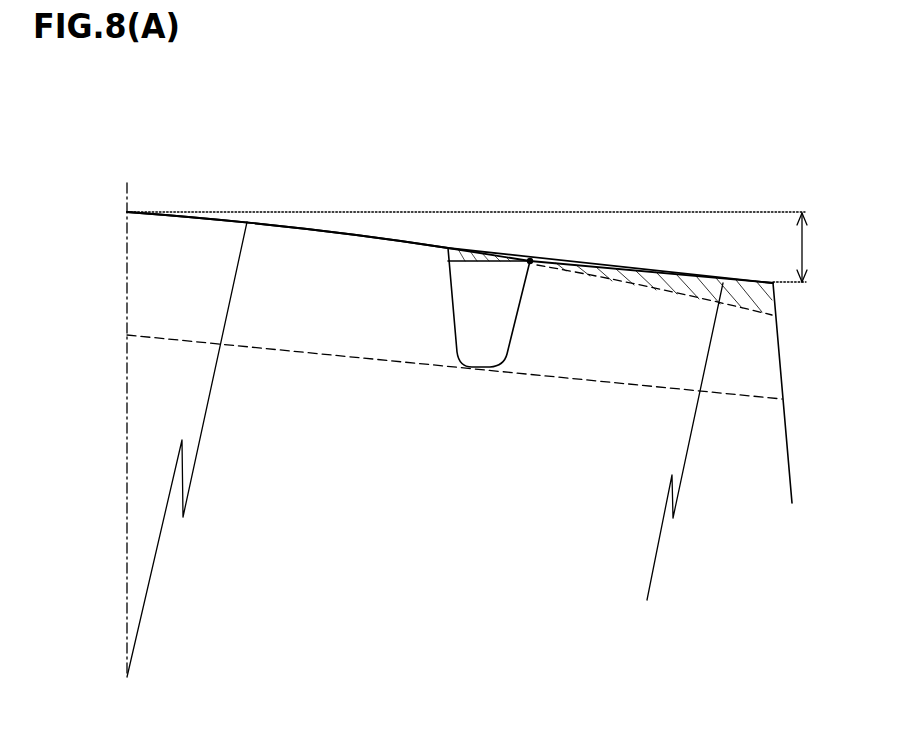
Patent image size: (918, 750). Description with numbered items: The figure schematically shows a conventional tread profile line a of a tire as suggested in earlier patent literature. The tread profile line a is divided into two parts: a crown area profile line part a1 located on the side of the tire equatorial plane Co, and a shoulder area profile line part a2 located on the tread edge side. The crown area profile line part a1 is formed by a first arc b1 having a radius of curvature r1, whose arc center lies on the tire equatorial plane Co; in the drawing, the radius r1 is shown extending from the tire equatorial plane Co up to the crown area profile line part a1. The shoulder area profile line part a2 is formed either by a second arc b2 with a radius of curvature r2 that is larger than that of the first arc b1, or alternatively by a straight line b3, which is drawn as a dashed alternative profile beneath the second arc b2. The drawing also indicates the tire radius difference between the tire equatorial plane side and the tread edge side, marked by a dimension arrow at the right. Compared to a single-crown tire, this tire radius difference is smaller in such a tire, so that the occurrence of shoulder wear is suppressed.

The tire equatorial plane Co is at (125, 418).
The tread profile line a is at (362, 124).
The crown area profile line part a1 is at (395, 237).
The first arc b1 is at (328, 187).
The shoulder area profile line part a2 is at (637, 268).
The second arc b2 is at (622, 213).
The straight line b3 is at (693, 275).
The radius of curvature r1 is at (187, 449).
The radius of curvature r2 is at (685, 441).